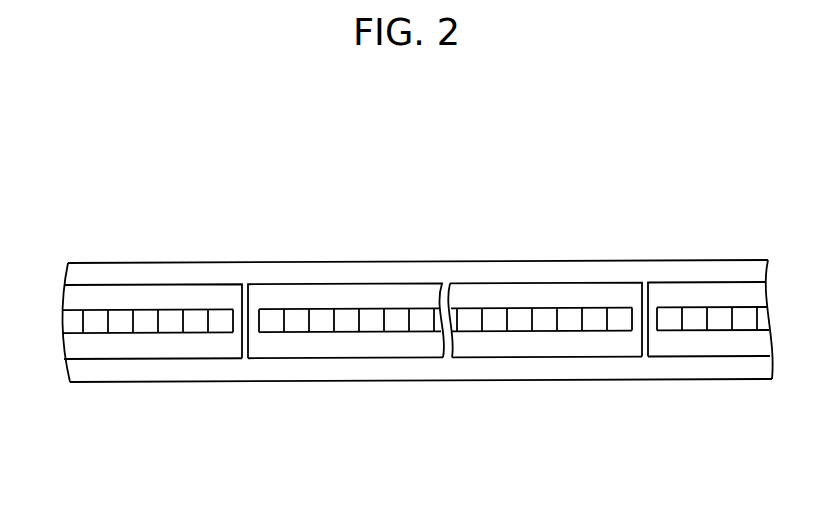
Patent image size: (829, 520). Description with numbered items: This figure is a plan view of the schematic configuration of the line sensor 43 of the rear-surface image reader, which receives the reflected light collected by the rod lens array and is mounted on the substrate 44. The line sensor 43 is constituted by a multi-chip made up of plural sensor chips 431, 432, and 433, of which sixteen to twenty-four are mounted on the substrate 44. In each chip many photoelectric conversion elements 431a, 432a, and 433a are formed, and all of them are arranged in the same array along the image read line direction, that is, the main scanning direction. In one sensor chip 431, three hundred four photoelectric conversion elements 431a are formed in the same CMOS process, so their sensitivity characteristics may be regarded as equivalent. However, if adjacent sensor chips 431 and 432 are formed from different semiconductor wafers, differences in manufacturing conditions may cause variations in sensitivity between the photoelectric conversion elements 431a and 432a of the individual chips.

The line sensor 43 is at (625, 178).
The substrate 44 is at (730, 370).
The sensor chip 431 is at (207, 290).
The photoelectric conversion elements 431a is at (152, 328).
The sensor chip 432 is at (372, 290).
The photoelectric conversion elements 432a is at (272, 328).
The sensor chip 433 is at (690, 288).
The photoelectric conversion elements 433a is at (718, 326).